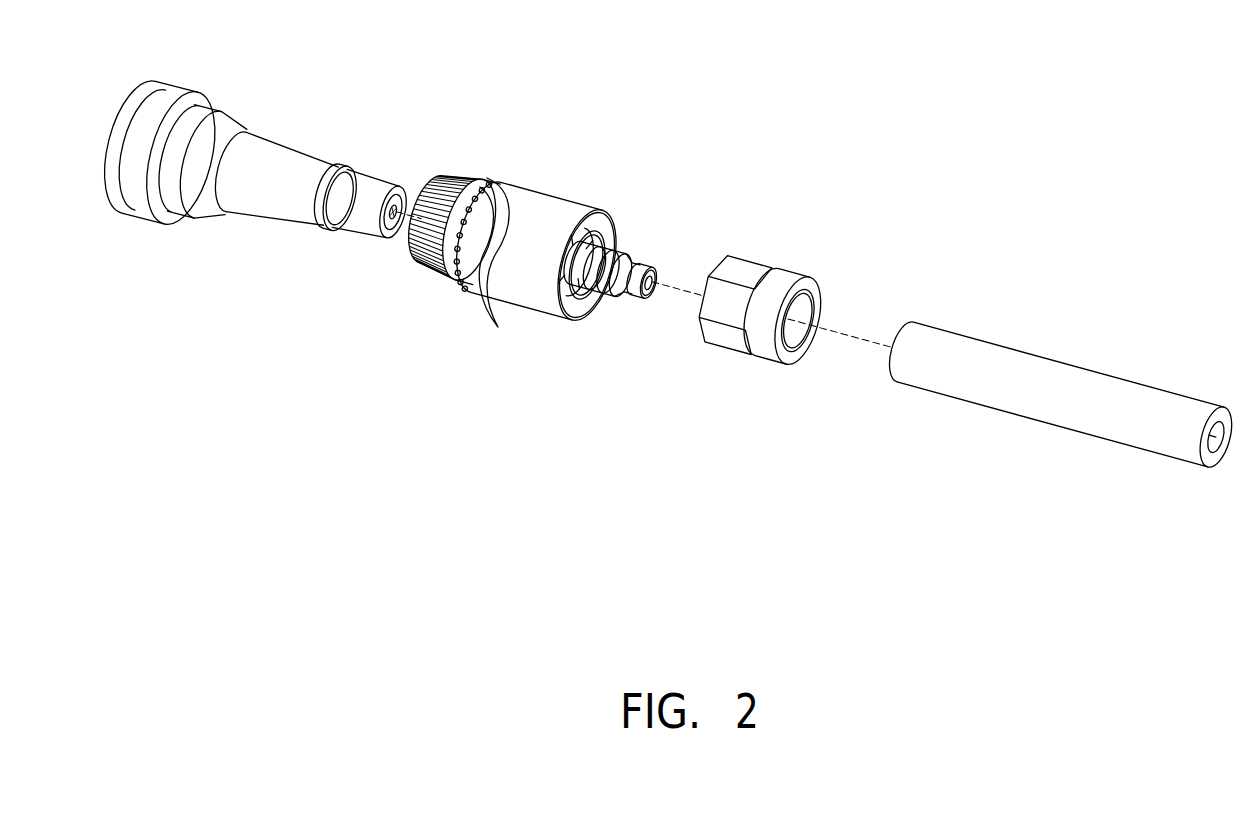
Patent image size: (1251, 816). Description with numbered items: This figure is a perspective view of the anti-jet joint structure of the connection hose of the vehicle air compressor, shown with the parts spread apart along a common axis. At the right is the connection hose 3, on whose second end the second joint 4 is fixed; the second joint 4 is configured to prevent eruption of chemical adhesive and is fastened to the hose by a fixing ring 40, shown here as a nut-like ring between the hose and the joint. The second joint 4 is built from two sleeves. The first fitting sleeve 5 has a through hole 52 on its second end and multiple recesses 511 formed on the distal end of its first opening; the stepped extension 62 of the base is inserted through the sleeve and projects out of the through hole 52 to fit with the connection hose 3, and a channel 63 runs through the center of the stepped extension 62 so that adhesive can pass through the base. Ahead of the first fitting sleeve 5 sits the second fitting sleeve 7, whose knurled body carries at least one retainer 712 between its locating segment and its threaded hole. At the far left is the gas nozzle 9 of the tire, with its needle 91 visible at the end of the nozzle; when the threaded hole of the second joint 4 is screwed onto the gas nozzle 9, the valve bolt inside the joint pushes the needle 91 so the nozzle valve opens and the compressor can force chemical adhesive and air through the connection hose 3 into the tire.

The connection hose 3 is at (1090, 413).
The second joint 4 is at (645, 240).
The first fitting sleeve 5 is at (597, 278).
The second fitting sleeve 7 is at (480, 182).
The retainer 712 is at (485, 183).
The recesses 511 is at (492, 318).
The through hole 52 is at (615, 232).
The stepped extension 62 is at (607, 284).
The channel 63 is at (655, 277).
The fixing ring 40 is at (730, 345).
The gas nozzle 9 is at (252, 237).
The needle 91 is at (395, 242).